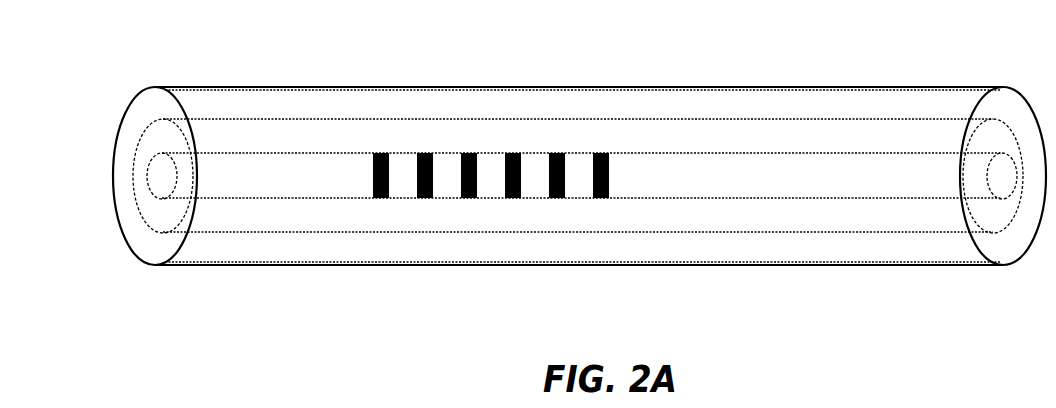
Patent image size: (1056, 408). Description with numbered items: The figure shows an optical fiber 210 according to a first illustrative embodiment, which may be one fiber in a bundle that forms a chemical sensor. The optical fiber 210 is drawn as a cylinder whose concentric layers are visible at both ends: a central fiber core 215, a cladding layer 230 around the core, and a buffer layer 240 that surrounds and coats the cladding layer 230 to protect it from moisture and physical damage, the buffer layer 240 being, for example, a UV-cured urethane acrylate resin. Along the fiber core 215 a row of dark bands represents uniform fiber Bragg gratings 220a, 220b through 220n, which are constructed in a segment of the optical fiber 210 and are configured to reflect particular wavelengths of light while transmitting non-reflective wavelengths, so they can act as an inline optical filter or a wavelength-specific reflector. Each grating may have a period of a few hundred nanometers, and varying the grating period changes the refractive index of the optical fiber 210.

The optical fiber 210 is at (128, 105).
The fiber core 215 is at (240, 152).
The Bragg grating 220a is at (385, 153).
The Bragg grating 220b is at (429, 198).
The Bragg grating 220n is at (600, 153).
The cladding layer 230 is at (772, 134).
The buffer layer 240 is at (911, 102).